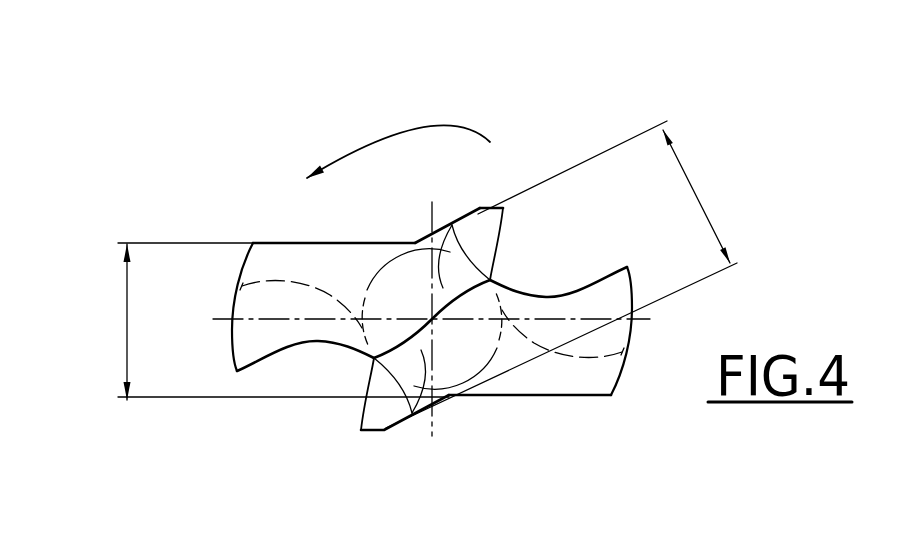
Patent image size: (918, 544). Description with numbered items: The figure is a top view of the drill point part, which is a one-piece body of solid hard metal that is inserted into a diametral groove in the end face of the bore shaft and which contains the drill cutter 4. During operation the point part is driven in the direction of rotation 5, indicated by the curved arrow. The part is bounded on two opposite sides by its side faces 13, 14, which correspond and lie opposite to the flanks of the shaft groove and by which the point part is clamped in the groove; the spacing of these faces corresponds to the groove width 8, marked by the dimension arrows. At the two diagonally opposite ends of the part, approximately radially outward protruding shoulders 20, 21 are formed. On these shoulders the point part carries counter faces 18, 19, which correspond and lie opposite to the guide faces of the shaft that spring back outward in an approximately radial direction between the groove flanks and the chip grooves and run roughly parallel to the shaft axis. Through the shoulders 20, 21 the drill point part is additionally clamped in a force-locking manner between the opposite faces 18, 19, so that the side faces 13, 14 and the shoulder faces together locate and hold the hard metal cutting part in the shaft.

The drill cutter 4 is at (323, 360).
The direction of rotation 5 is at (410, 127).
The groove width 8 is at (125, 335).
The side face 13 is at (305, 238).
The side face 14 is at (515, 400).
The counter face 18 is at (470, 214).
The counter face 19 is at (400, 413).
The shoulder 20 is at (505, 207).
The shoulder 21 is at (368, 435).